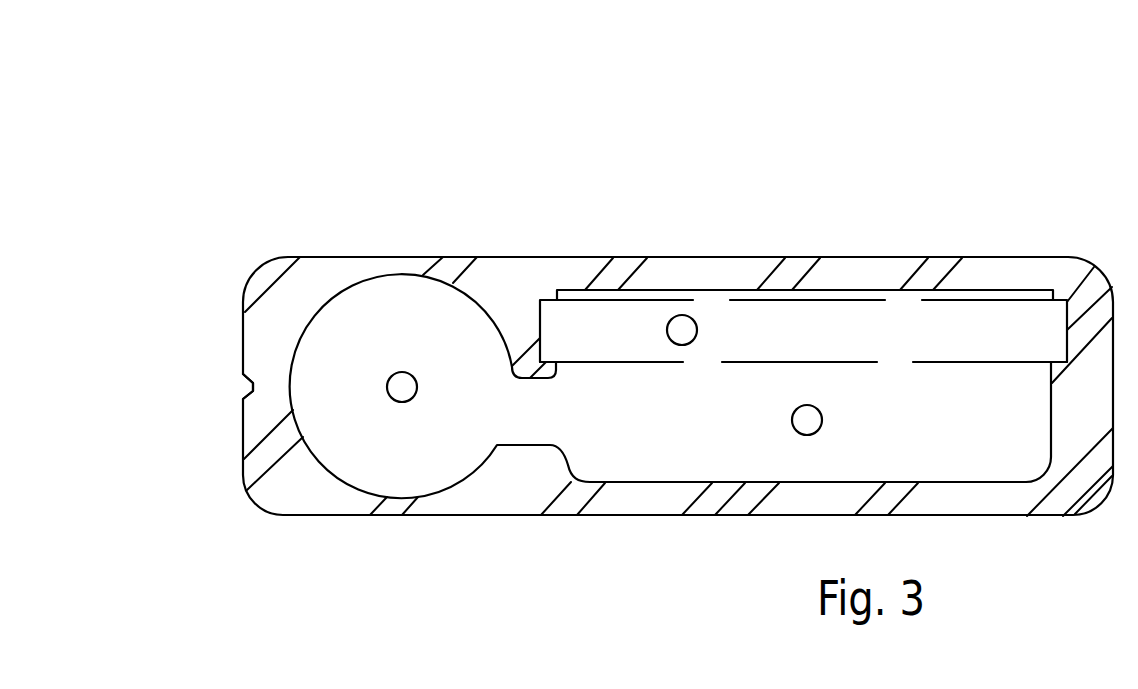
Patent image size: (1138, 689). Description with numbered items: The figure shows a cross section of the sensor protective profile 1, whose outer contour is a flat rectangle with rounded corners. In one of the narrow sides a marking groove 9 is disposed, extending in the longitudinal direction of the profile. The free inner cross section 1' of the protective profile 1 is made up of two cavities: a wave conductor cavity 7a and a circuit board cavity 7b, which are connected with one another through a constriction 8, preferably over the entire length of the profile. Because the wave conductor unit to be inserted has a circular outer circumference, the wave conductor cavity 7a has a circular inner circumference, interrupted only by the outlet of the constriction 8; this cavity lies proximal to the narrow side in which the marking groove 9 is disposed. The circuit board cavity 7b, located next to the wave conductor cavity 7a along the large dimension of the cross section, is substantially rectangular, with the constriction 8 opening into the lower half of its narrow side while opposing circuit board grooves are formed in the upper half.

The protective profile 1 is at (672, 431).
The free inner cross section 1' is at (858, 231).
The wave conductor cavity 7a is at (391, 376).
The circuit board cavity 7b is at (680, 315).
The constriction 8 is at (525, 392).
The marking groove 9 is at (240, 377).